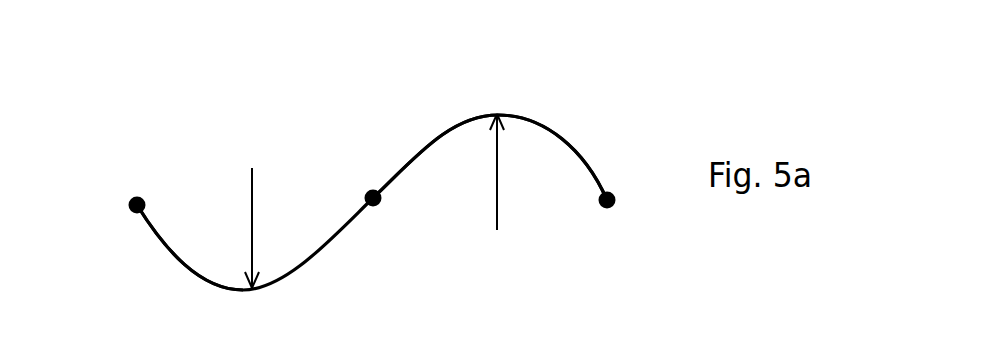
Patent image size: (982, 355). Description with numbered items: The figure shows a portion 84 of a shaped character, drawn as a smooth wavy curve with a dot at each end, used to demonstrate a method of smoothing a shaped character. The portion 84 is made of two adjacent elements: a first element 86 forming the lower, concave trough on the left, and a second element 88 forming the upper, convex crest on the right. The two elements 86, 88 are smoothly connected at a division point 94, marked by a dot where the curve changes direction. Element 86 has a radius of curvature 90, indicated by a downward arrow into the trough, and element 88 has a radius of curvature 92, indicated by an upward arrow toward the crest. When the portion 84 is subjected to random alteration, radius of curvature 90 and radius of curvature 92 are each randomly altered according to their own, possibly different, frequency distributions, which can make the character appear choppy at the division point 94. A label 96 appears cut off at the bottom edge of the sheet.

The portion 84 is at (615, 85).
The element 86 is at (195, 282).
The element 88 is at (442, 130).
The radius of curvature 90 is at (248, 215).
The radius of curvature 92 is at (500, 190).
The division point 94 is at (378, 208).
The reference element (cut off) 96 is at (693, 349).